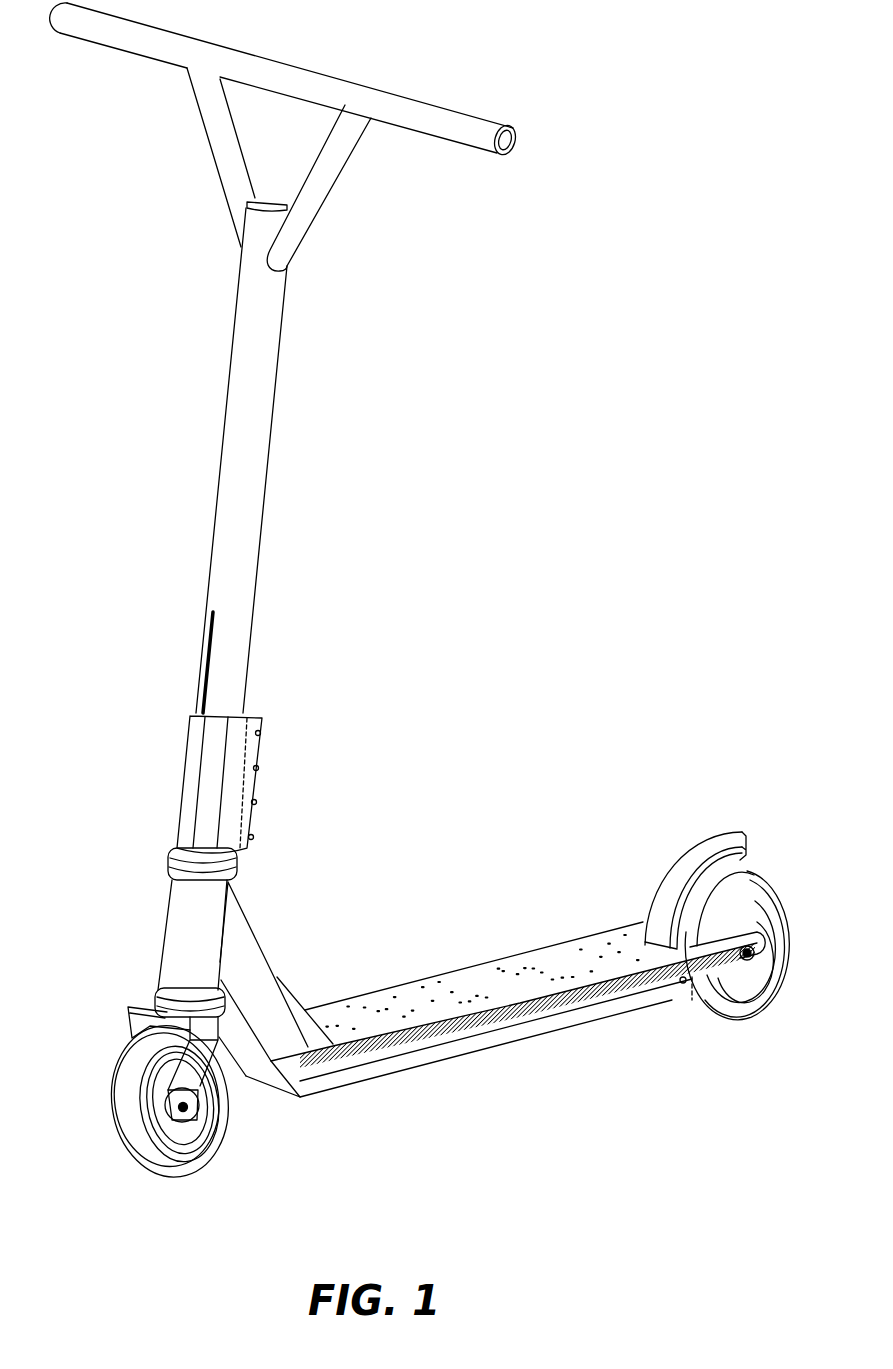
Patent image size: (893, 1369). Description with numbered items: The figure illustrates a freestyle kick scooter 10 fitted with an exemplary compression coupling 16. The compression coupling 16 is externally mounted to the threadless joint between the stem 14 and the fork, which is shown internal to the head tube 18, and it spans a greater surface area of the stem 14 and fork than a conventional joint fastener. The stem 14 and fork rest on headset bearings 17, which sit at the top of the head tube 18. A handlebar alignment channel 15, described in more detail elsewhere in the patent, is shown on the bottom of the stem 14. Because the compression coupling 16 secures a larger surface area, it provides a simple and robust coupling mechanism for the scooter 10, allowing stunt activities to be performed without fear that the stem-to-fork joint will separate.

The freestyle kick scooter 10 is at (787, 65).
The stem 14 is at (247, 468).
The handlebar alignment channel 15 is at (197, 670).
The compression coupling 16 is at (237, 762).
The headset bearings 17 is at (227, 860).
The head tube 18 is at (182, 918).